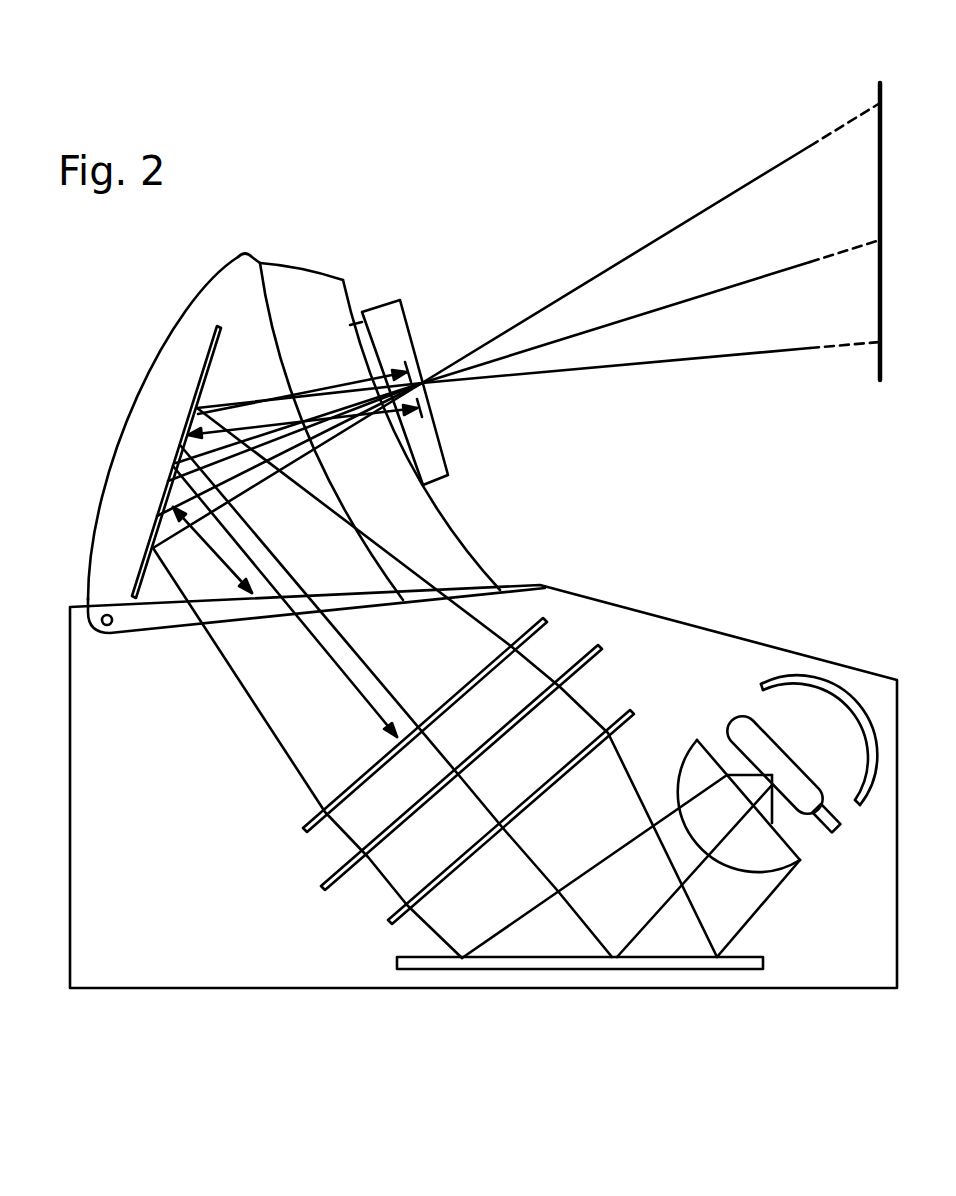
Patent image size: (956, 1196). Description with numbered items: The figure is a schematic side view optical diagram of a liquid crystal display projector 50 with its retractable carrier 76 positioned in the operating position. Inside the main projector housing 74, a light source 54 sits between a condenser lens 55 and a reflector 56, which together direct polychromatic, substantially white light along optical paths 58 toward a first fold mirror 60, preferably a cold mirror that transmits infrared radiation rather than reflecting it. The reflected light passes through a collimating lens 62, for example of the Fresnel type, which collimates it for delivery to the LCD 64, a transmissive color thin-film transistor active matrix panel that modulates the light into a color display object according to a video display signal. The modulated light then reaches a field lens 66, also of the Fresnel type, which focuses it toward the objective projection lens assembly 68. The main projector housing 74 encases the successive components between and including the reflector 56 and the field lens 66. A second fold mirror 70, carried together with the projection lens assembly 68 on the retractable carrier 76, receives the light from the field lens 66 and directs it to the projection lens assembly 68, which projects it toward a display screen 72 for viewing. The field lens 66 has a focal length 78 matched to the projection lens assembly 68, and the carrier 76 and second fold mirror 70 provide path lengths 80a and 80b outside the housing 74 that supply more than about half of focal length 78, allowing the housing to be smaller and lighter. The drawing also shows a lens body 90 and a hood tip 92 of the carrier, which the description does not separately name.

The liquid crystal display (LCD) projector 50 is at (672, 529).
The light source 54 is at (742, 720).
The condenser lens 55 is at (780, 863).
The reflector 56 is at (775, 683).
The optical paths 58 is at (752, 909).
The first fold mirror 60 is at (705, 969).
The collimating lens 62 is at (570, 777).
The LCD 64 is at (550, 707).
The field lens 66 is at (498, 672).
The projection lens assembly 68 is at (402, 308).
The second fold mirror 70 is at (152, 507).
The display screen 72 is at (877, 98).
The main projector housing 74 is at (778, 645).
The retractable carrier 76 is at (208, 279).
The focal length 78 is at (320, 440).
The path length 80a is at (210, 550).
The path length 80b is at (262, 410).
The lens body 90 is at (312, 288).
The hood tip 92 is at (245, 262).